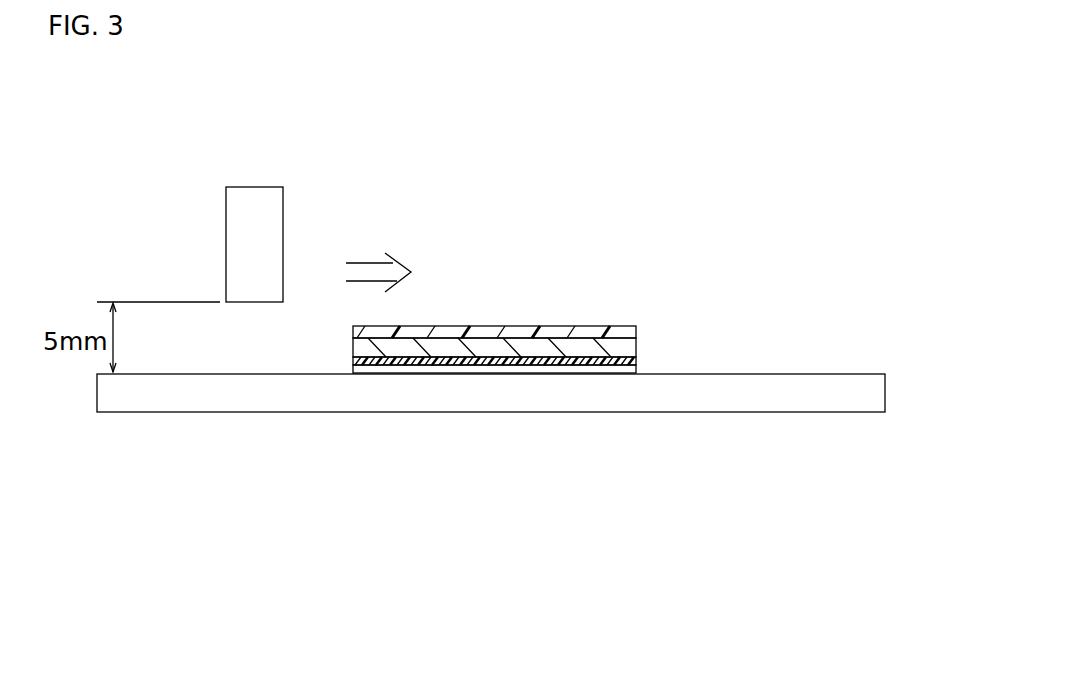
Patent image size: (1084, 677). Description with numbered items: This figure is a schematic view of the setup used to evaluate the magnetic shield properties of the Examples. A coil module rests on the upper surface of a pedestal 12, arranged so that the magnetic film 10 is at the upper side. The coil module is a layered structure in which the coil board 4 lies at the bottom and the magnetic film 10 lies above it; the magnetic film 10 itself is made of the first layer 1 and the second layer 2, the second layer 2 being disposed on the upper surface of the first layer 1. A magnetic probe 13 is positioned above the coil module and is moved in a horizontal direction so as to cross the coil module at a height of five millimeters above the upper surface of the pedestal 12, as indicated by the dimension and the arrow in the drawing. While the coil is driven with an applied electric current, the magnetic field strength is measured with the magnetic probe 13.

The first layer 1 is at (636, 348).
The second layer 2 is at (636, 332).
The coil board 4 is at (636, 370).
The magnetic film 10 is at (571, 301).
The pedestal 12 is at (885, 388).
The magnetic probe 13 is at (283, 213).